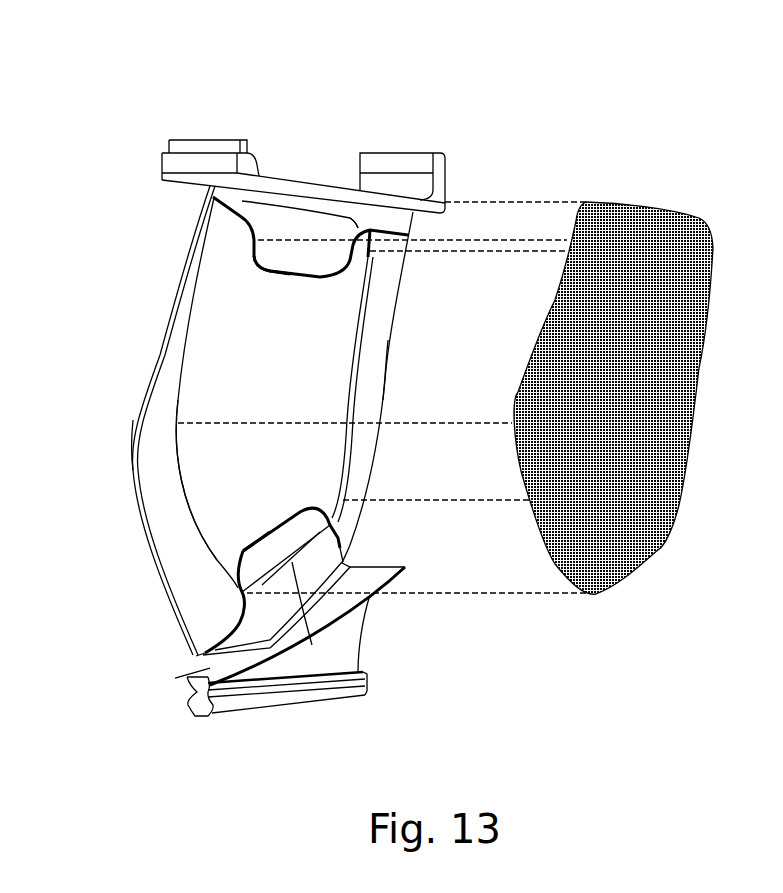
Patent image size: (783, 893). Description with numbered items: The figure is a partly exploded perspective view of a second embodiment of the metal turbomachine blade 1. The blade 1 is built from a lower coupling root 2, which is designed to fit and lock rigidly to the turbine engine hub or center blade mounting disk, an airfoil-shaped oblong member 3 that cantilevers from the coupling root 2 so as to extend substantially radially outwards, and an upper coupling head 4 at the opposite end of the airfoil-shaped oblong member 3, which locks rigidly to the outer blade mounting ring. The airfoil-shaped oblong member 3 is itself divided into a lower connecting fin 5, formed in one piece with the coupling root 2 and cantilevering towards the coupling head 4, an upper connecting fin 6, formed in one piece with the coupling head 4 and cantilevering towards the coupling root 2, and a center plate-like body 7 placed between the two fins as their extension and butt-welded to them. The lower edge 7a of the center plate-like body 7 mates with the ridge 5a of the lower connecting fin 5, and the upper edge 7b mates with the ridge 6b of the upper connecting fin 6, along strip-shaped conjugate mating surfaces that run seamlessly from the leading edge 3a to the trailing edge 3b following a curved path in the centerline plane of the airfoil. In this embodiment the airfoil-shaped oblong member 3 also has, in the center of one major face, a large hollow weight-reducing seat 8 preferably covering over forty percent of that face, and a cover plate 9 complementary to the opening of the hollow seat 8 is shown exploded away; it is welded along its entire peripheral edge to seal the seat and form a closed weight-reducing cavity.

The blade 1 is at (604, 119).
The coupling root 2 is at (257, 713).
The airfoil-shaped oblong member 3 is at (163, 358).
The leading edge 3a is at (130, 442).
The trailing edge 3b is at (388, 380).
The coupling head 4 is at (284, 178).
The lower connecting fin 5 is at (205, 656).
The ridge 5a is at (241, 553).
The upper connecting fin 6 is at (223, 197).
The ridge 6b is at (260, 272).
The center plate-like body 7 is at (183, 572).
The lower edge 7a is at (248, 606).
The upper edge 7b is at (352, 237).
The hollow weight-reducing seat 8 is at (293, 561).
The cover plate 9 is at (655, 457).